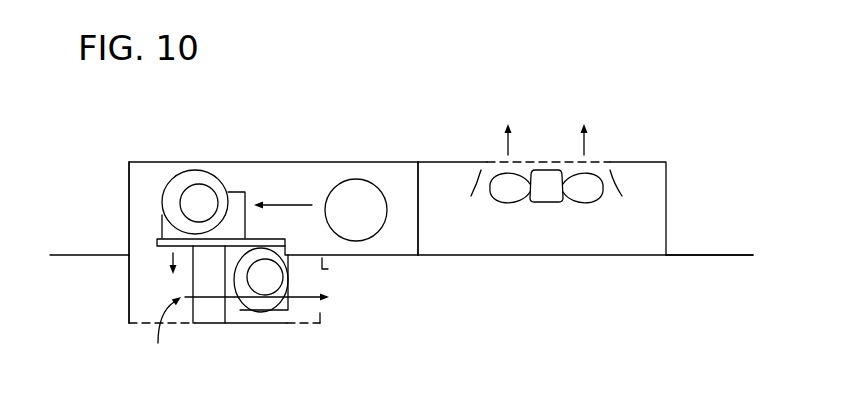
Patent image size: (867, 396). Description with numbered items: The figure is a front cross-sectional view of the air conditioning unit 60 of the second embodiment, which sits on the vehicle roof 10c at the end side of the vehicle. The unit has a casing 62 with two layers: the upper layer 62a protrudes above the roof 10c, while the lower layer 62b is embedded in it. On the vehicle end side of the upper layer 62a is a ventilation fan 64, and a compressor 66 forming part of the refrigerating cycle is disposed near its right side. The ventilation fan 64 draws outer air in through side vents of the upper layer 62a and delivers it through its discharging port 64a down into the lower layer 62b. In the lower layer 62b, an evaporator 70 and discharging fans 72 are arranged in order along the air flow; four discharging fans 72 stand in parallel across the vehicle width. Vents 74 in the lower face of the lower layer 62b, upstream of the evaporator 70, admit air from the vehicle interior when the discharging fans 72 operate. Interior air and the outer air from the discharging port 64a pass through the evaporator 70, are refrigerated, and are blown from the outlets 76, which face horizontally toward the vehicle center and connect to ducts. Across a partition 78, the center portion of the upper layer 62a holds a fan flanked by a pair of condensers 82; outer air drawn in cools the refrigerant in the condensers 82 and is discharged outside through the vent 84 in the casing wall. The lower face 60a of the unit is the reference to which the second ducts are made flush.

The roof 10c is at (715, 255).
The air conditioning unit 60 is at (323, 146).
The lower face of the air conditioning unit 60a is at (297, 323).
The casing 62 is at (660, 158).
The upper layer 62a is at (129, 181).
The lower layer 62b is at (129, 288).
The ventilation fan 64 is at (192, 177).
The discharging port 64a is at (157, 244).
The compressor 66 is at (332, 196).
The evaporator 70 is at (205, 324).
The discharging fans 72 is at (263, 305).
The vents 74 is at (140, 325).
The outlets 76 is at (320, 313).
The partition 78 is at (418, 233).
The condensers 82 is at (546, 175).
The vent 84 is at (598, 162).